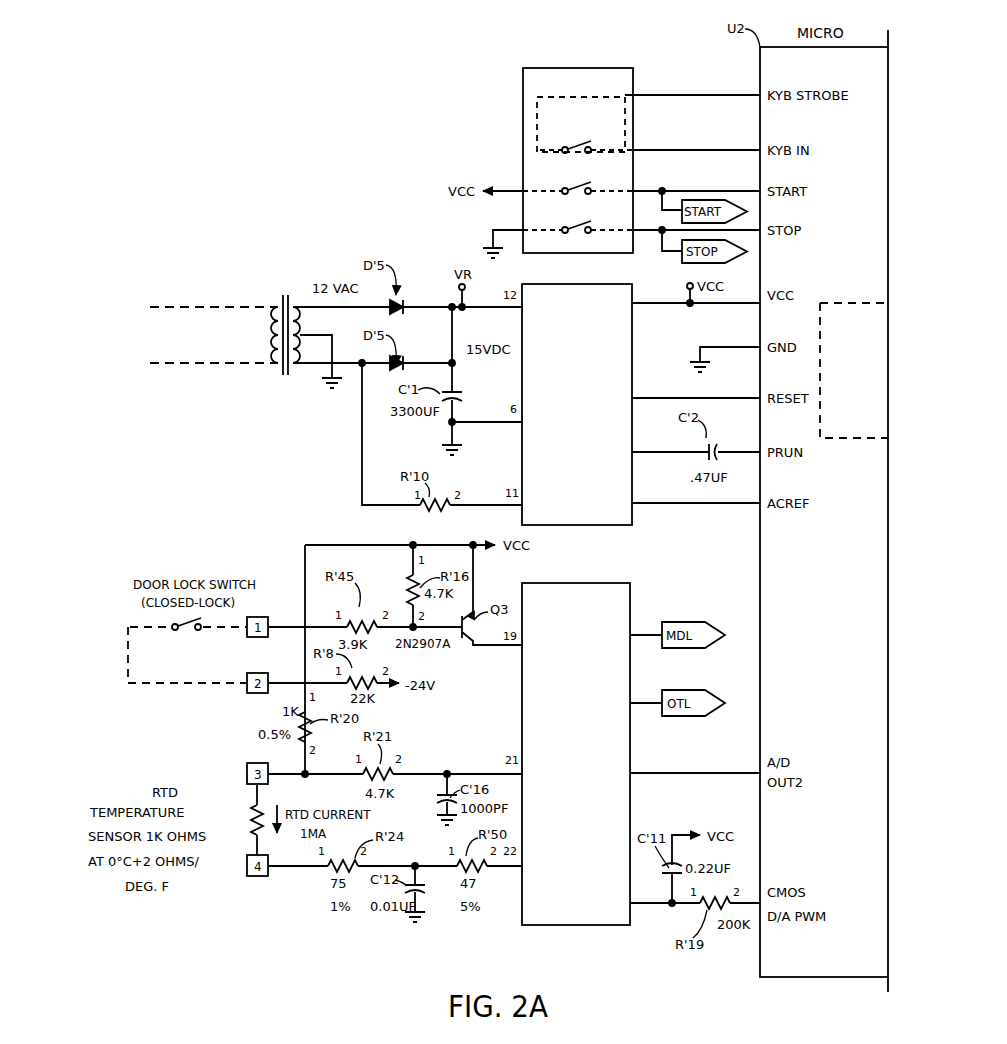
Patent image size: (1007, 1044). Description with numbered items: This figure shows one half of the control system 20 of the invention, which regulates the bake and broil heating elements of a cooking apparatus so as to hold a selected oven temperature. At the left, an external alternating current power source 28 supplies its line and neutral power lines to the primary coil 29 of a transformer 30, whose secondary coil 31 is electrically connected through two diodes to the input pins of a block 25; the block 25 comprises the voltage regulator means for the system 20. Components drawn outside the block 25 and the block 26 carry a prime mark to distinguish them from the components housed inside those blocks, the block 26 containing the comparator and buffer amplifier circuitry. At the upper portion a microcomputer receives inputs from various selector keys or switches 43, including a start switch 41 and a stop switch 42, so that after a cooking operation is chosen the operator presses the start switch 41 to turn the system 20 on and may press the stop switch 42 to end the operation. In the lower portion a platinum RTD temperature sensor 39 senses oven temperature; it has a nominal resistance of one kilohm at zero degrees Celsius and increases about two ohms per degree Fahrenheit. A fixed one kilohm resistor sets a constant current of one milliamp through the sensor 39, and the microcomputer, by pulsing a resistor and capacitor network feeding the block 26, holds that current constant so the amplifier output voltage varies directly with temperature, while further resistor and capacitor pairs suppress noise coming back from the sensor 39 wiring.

The control system 20 is at (412, 197).
The block 25 is at (632, 347).
The block 26 is at (597, 583).
The external electrical power source 28 is at (212, 292).
The primary coil 29 is at (276, 300).
The transformer 30 is at (282, 372).
The secondary coil 31 is at (298, 300).
The RTD temperature sensor 39 is at (253, 817).
The start switch 41 is at (593, 180).
The stop switch 42 is at (593, 220).
The selector keys or switches 43 is at (612, 122).